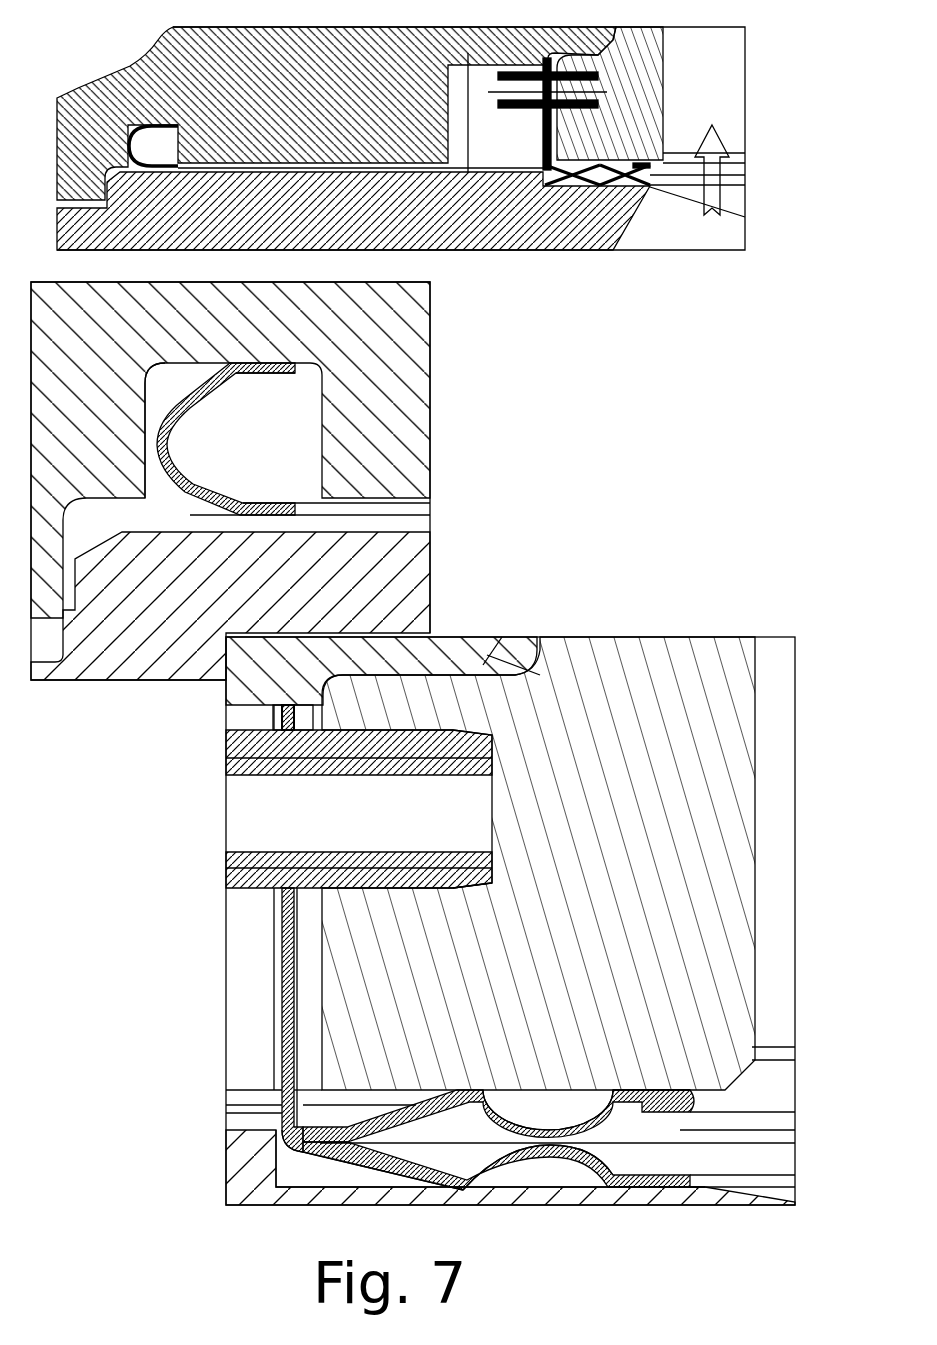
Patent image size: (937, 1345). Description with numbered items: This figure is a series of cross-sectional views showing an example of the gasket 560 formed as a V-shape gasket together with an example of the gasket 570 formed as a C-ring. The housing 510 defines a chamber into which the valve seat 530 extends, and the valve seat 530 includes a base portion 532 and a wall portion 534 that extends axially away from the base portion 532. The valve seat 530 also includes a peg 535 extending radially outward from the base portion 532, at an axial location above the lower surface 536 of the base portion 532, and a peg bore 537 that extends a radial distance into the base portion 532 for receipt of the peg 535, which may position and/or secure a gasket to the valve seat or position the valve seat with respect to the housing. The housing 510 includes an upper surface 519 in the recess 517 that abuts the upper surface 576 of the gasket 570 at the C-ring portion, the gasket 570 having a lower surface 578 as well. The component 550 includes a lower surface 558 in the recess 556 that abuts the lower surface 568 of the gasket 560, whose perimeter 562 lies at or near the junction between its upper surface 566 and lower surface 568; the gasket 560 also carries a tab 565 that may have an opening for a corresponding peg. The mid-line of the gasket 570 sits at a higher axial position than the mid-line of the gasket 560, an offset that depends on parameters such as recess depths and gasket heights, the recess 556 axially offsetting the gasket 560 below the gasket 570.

The housing 510 is at (397, 129).
The recess 517 is at (110, 430).
The upper surface 519 is at (156, 352).
The valve seat 530 is at (647, 131).
The base portion 532 is at (651, 891).
The wall portion 534 is at (674, 666).
The peg 535 is at (530, 808).
The lower surface 536 is at (628, 1062).
The peg bore 537 is at (498, 908).
The component 550 is at (401, 223).
The recess 556 is at (317, 1181).
The lower surface 558 is at (383, 1171).
The gasket 560 is at (795, 1137).
The perimeter 562 is at (338, 1084).
The tab 565 is at (338, 1020).
The upper surface 566 is at (542, 1082).
The lower surface 568 is at (572, 1167).
The gasket 570 is at (223, 448).
The upper surface 576 is at (259, 395).
The lower surface 578 is at (259, 483).